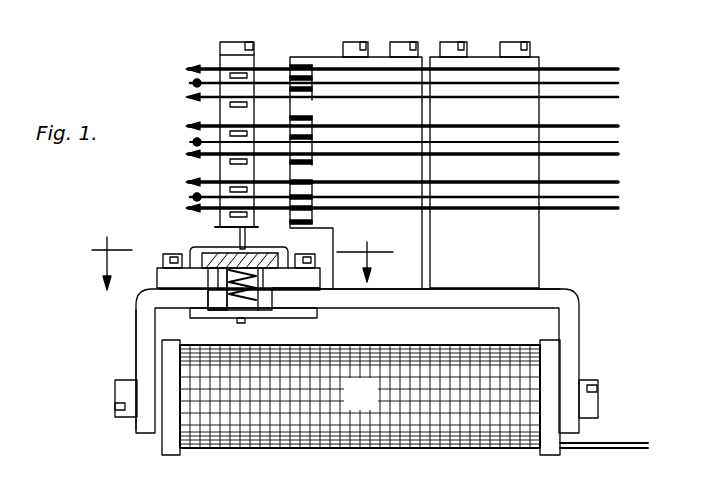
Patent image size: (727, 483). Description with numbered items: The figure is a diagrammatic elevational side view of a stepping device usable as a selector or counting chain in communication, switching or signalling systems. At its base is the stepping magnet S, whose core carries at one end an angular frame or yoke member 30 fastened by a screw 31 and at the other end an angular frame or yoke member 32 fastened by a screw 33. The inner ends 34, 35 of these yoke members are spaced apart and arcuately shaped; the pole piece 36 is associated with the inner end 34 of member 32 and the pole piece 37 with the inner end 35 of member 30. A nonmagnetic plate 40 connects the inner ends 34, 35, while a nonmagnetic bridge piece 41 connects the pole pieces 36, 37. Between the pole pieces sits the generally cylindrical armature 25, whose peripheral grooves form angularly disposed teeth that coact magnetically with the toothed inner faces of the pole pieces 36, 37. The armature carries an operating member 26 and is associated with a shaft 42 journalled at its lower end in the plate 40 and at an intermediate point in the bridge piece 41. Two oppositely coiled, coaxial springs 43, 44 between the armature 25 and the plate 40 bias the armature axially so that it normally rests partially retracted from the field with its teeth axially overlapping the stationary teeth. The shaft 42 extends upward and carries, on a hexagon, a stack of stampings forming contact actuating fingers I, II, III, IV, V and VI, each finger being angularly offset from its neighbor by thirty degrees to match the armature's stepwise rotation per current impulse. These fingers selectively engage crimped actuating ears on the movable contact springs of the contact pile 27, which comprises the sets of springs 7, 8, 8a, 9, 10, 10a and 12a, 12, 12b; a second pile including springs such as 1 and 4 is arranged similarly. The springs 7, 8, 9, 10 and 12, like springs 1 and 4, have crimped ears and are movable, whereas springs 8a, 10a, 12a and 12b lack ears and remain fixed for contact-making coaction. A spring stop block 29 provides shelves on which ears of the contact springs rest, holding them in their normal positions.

The contact spring 1 is at (190, 208).
The contact spring 7 is at (202, 210).
The contact spring 8 is at (192, 197).
The contact spring 8a is at (190, 182).
The contact spring 9 is at (192, 154).
The contact spring 10 is at (193, 142).
The contact spring 10a is at (190, 126).
The contact spring 12 is at (193, 82).
The contact spring 12a is at (190, 97).
The contact spring 12b is at (190, 68).
The armature 25 is at (287, 248).
The operating member 26 is at (260, 57).
The contact pile 27 is at (482, 58).
The spring stop block 29 is at (373, 58).
The angular frame or yoke member 30 is at (573, 333).
The screw 31 is at (590, 407).
The angular frame or yoke member 32 is at (143, 348).
The screw 33 is at (125, 395).
The inner end of frame member 34 is at (187, 297).
The inner end of frame member 35 is at (290, 300).
The pole piece 36 is at (157, 279).
The pole piece 37 is at (310, 280).
The nonmagnetic plate 40 is at (282, 313).
The nonmagnetic bridge piece 41 is at (187, 250).
The shaft 42 is at (240, 233).
The coiled spring 43 is at (223, 310).
The coiled spring 44 is at (248, 310).
The contact spring 4 is at (232, 263).
The stepping magnet S is at (372, 406).
The contact actuating finger I is at (250, 219).
The contact actuating finger II is at (292, 222).
The contact actuating finger III is at (250, 168).
The contact actuating finger IV is at (292, 165).
The contact actuating finger V is at (250, 112).
The contact actuating finger VI is at (275, 65).